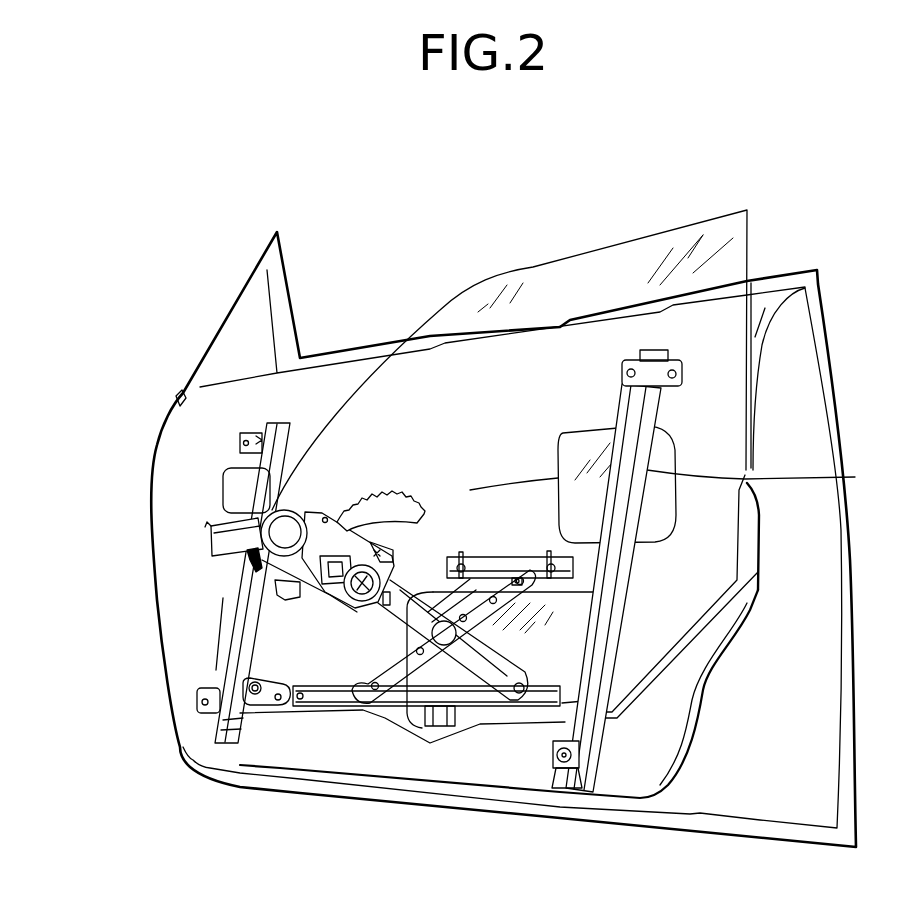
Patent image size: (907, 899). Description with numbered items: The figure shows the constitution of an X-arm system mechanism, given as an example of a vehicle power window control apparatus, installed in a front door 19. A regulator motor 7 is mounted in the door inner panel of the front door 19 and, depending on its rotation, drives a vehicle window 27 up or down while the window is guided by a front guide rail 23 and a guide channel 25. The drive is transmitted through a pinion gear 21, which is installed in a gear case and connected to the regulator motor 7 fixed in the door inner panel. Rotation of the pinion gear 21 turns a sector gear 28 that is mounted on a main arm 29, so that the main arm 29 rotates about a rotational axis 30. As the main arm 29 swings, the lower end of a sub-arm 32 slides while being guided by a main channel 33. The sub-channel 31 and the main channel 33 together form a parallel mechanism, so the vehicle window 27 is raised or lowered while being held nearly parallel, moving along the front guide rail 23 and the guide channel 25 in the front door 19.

The front door 19 is at (538, 204).
The vehicle window 27 is at (752, 230).
The guide channel 25 is at (760, 479).
The front guide rail 23 is at (222, 491).
The regulator motor 7 is at (210, 536).
The pinion gear 21 is at (305, 502).
The sector gear 28 is at (395, 500).
The main arm 29 is at (420, 565).
The rotational axis 30 is at (345, 602).
The sub-channel 31 is at (555, 552).
The sub-arm 32 is at (395, 672).
The main channel 33 is at (378, 704).